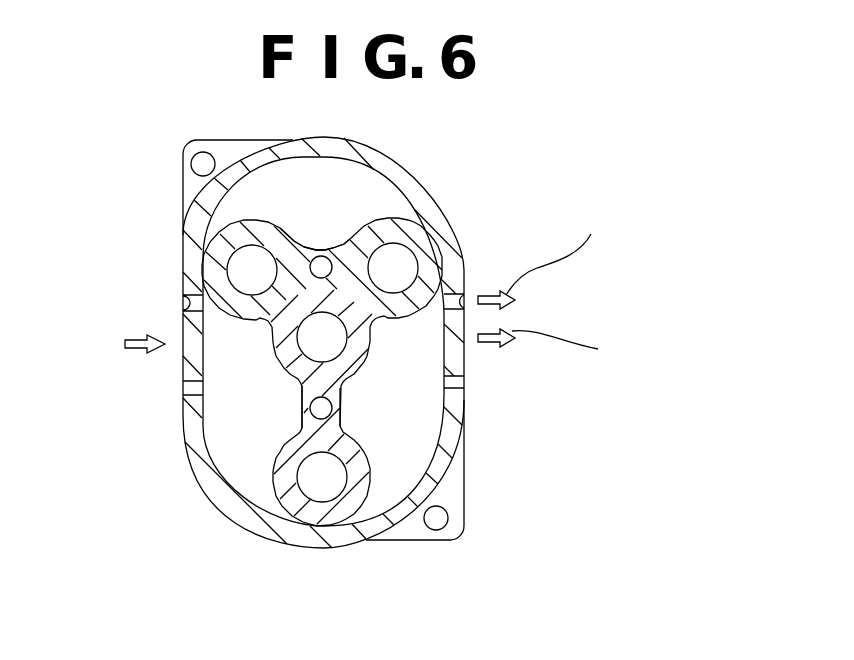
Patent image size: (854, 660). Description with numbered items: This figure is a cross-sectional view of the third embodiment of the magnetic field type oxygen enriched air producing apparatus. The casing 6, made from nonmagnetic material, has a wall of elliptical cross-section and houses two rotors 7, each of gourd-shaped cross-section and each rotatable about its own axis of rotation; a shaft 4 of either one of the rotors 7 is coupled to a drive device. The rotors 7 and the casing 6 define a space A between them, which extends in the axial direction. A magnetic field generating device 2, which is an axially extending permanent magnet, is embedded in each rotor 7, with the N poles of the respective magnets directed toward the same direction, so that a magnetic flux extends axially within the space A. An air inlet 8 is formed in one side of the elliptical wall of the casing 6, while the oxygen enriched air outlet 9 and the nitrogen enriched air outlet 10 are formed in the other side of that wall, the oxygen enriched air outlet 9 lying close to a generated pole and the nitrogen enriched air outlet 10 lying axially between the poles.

The magnetic field generating device 2 is at (243, 268).
The shaft 4 is at (323, 253).
The casing 6 is at (463, 250).
The rotor 7 is at (290, 242).
The air inlet 8 is at (183, 306).
The oxygen enriched air outlet 9 is at (465, 302).
The nitrogen enriched air outlet 10 is at (588, 374).
The space A is at (412, 410).